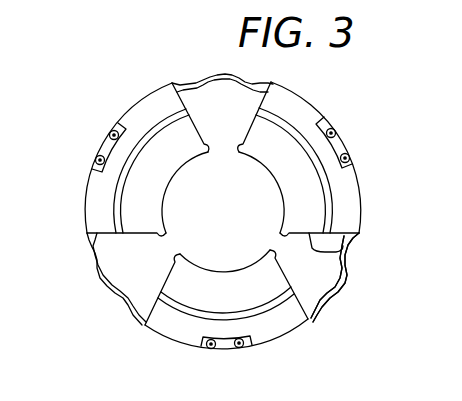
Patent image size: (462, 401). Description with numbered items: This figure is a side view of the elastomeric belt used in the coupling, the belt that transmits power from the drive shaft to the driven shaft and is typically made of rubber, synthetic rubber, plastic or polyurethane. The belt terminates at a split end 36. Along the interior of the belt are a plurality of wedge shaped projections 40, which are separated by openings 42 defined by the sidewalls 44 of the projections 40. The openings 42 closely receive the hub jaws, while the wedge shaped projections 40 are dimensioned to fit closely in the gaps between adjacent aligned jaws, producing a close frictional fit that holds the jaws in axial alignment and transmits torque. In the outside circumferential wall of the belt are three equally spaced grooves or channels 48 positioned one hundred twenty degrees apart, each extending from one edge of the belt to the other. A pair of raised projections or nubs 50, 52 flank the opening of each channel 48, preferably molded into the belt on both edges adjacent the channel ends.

The split end 36 is at (340, 285).
The wedge shaped projection 40 is at (130, 187).
The opening 42 is at (200, 101).
The sidewall 44 is at (316, 326).
The axial groove or channel 48 is at (106, 141).
The raised projection or nub 50 is at (115, 126).
The raised projection or nub 52 is at (95, 156).